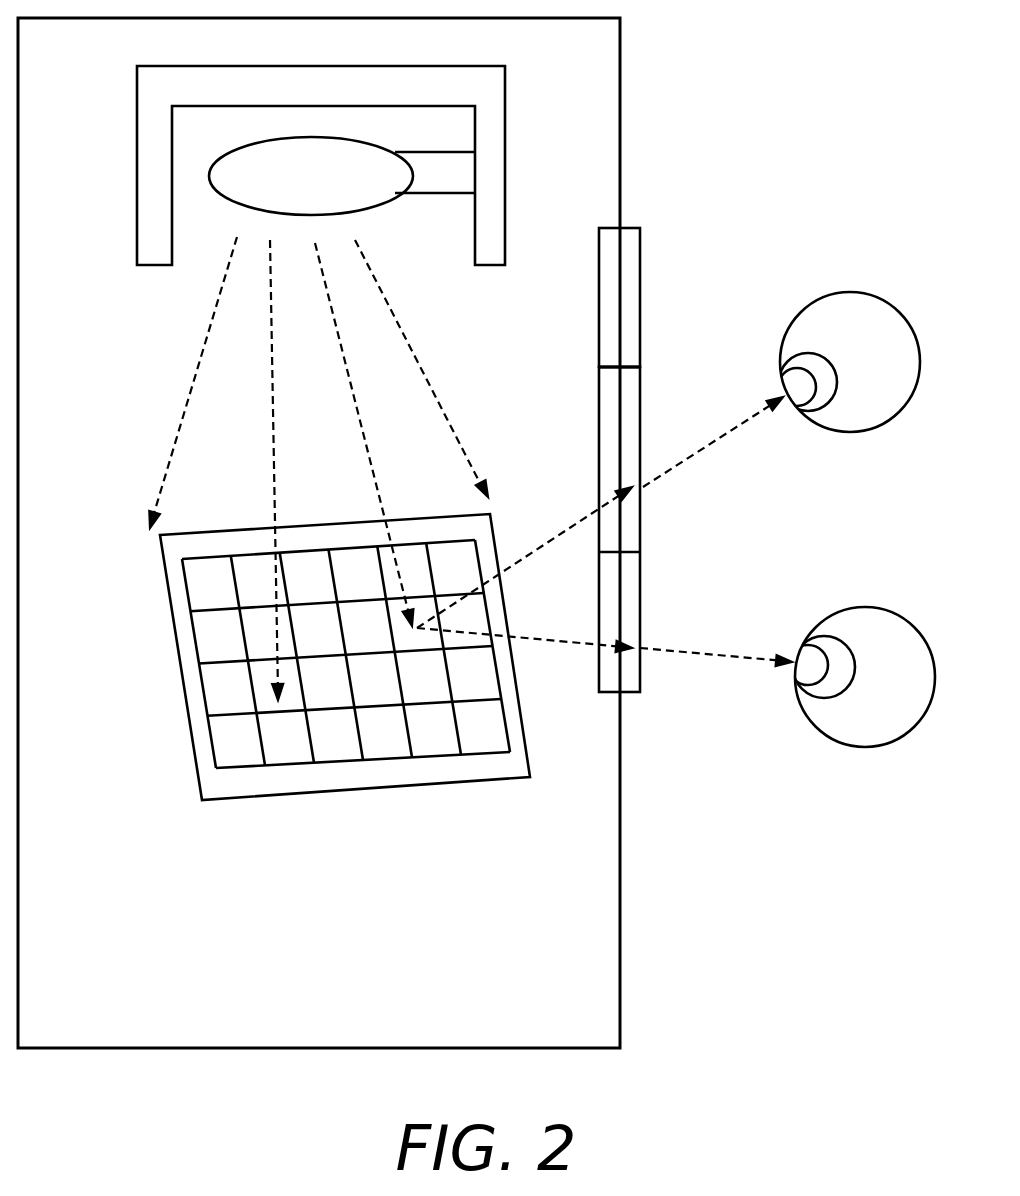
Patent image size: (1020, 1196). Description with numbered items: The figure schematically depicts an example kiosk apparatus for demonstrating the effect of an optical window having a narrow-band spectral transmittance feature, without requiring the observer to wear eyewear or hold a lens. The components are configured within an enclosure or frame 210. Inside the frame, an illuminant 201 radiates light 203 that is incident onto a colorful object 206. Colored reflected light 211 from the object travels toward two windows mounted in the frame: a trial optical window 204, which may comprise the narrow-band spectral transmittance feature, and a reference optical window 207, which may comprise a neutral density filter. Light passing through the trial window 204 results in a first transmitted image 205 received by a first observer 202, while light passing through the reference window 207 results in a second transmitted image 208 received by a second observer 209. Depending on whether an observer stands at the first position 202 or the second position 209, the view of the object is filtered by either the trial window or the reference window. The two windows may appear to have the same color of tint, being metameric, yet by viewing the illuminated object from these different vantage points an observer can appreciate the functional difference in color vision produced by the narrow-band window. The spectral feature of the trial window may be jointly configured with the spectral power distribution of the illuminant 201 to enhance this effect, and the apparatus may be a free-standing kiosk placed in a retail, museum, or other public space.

The illuminant 201 is at (321, 165).
The first observer 202 is at (841, 352).
The light radiated by the illuminant 203 is at (318, 468).
The trial optical window 204 is at (650, 317).
The first transmitted image 205 is at (713, 442).
The colorful object 206 is at (312, 657).
The reference optical window 207 is at (652, 529).
The second transmitted image 208 is at (716, 680).
The second observer 209 is at (861, 656).
The enclosure or frame 210 is at (357, 533).
The colored reflected light 211 is at (524, 569).